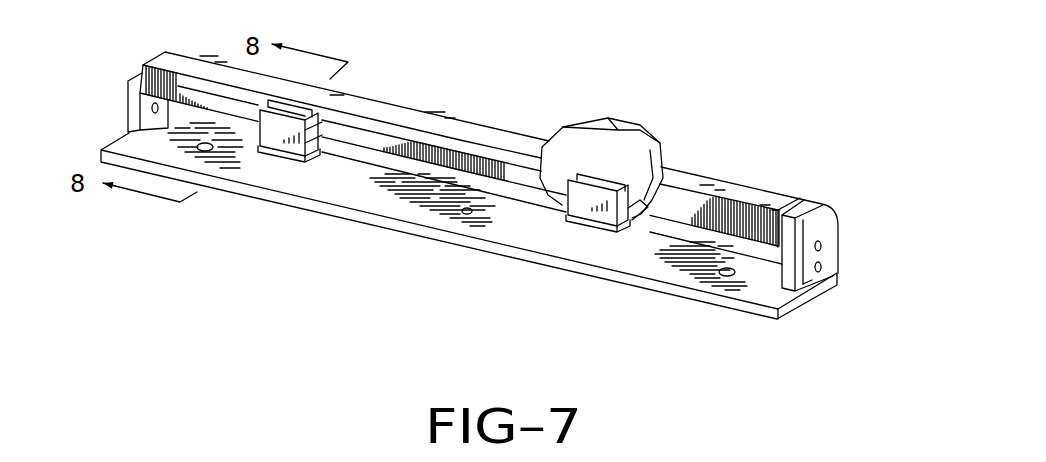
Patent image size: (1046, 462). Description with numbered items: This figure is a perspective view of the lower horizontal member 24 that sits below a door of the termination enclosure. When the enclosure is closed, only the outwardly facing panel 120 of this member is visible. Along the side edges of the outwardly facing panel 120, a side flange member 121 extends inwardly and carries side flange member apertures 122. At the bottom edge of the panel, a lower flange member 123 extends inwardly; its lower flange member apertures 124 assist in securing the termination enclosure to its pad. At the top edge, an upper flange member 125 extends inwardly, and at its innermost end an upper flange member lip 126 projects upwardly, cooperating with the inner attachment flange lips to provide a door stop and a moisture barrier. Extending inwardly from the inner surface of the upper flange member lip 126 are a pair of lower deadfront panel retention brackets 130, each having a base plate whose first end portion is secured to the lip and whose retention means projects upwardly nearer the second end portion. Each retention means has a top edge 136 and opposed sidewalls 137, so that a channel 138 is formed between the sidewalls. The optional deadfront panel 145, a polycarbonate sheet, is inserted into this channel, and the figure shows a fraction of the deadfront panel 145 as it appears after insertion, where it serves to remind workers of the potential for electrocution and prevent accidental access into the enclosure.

The lower horizontal member 24 is at (388, 300).
The outwardly facing panel 120 is at (834, 206).
The side flange member 121 is at (812, 278).
The side flange member apertures 122 is at (822, 243).
The lower flange member 123 is at (768, 288).
The lower flange member apertures 124 is at (466, 216).
The upper flange member 125 is at (423, 117).
The upper flange member lip 126 is at (698, 212).
The lower deadfront panel retention bracket 130 is at (272, 157).
The top edge 136 is at (593, 190).
The opposed sidewalls 137 is at (318, 127).
The channel 138 is at (322, 148).
The deadfront panel 145 is at (573, 155).